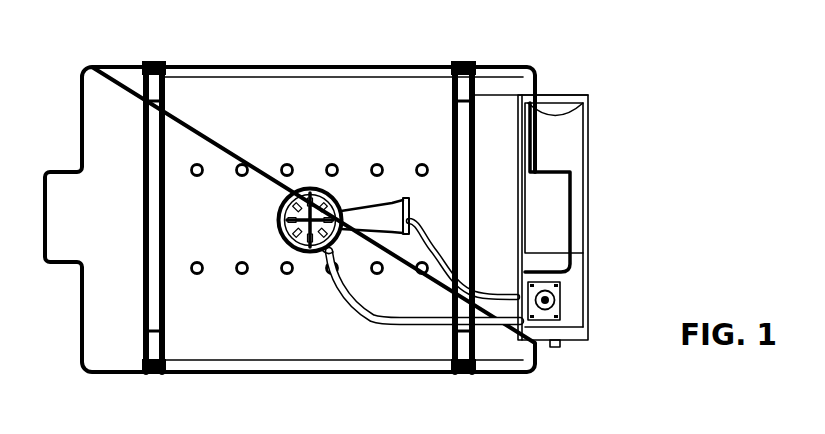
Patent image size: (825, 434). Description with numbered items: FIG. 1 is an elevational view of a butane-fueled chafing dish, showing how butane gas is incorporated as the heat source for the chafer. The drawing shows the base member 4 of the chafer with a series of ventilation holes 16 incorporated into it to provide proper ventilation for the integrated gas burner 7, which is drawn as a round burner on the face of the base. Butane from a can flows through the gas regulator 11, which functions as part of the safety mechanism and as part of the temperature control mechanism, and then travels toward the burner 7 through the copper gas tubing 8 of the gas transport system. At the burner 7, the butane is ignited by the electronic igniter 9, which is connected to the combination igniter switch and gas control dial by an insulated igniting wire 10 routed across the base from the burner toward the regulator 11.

The base member 4 is at (232, 95).
The integrated gas burner 7 is at (310, 181).
The gas tubing 8 is at (505, 290).
The electronic igniter 9 is at (325, 262).
The igniting wire 10 is at (410, 325).
The gas regulator 11 is at (556, 297).
The ventilation holes 16 is at (421, 164).